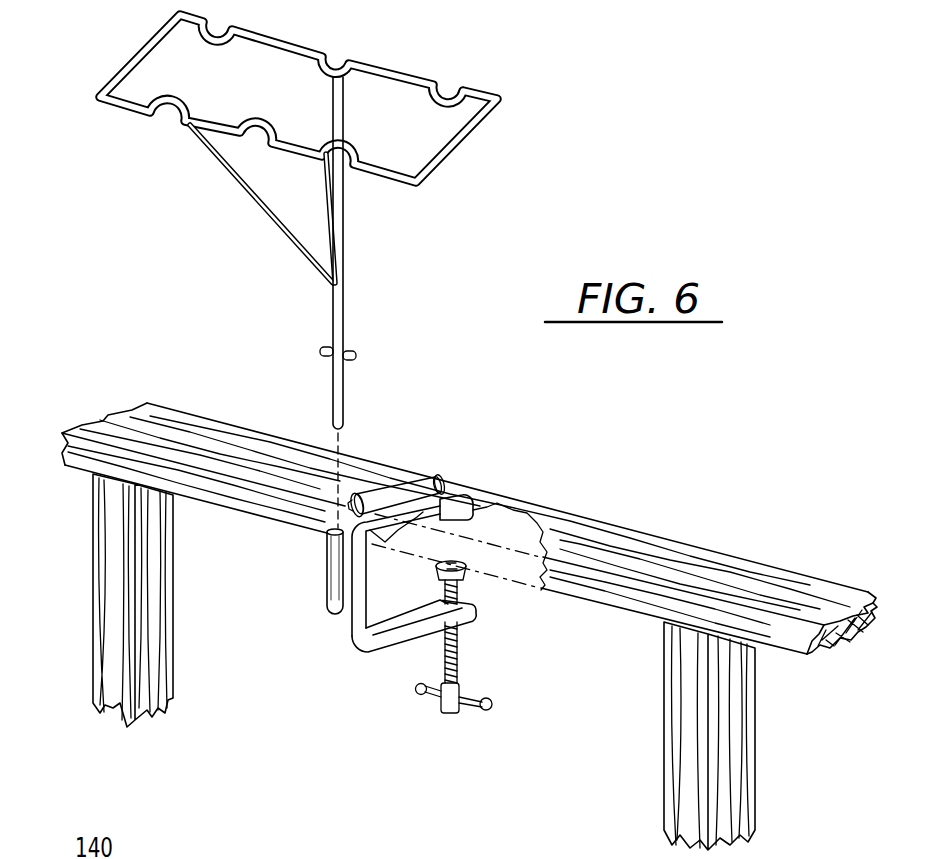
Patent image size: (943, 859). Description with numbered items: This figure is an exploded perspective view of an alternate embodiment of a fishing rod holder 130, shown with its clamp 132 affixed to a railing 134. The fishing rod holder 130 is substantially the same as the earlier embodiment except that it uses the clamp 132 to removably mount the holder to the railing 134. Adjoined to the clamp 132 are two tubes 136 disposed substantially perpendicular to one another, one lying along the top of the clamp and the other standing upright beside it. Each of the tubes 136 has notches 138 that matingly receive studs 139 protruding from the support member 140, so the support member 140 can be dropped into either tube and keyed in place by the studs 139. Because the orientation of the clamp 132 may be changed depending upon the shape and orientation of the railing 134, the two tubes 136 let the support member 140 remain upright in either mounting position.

The fishing rod holder 130 is at (510, 118).
The clamp 132 is at (347, 652).
The railing 134 is at (597, 518).
The tubes 136 is at (418, 478).
The notches 138 is at (354, 500).
The studs 139 is at (322, 345).
The support member 140 is at (344, 320).